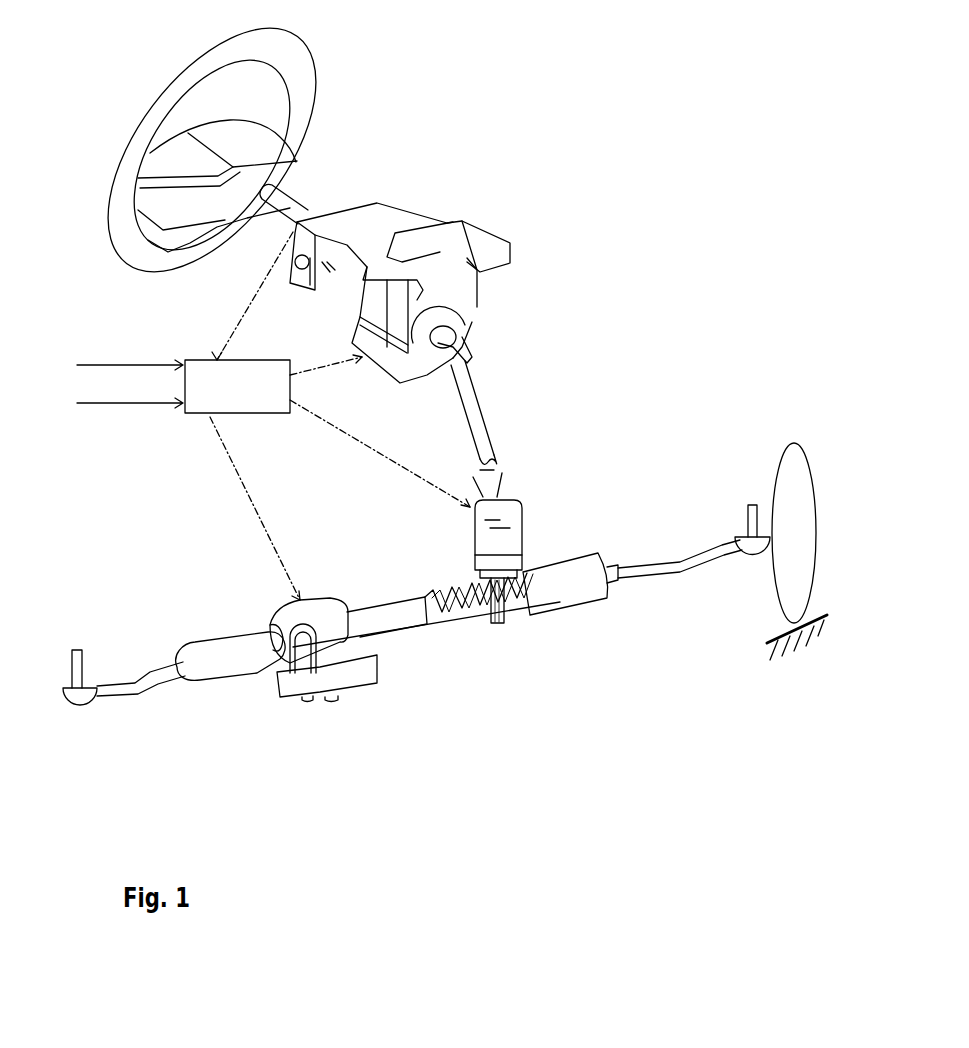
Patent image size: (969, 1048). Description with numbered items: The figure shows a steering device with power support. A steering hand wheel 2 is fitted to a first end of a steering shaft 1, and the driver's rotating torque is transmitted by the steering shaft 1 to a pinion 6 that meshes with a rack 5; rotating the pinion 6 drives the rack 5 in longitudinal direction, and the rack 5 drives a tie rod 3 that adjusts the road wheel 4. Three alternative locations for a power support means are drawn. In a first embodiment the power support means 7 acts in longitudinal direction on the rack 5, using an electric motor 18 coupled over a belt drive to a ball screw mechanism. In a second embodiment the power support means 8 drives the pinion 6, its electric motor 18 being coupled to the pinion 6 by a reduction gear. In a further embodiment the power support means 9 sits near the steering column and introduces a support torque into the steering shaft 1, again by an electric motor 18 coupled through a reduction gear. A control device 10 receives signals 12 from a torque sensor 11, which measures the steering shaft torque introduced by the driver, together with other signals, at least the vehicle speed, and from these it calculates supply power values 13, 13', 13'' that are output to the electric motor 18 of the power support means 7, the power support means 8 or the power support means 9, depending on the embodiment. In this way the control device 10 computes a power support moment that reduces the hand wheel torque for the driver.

The steering shaft 1 is at (293, 210).
The steering hand wheel 2 is at (305, 98).
The tie rod 3 is at (147, 667).
The road wheel 4 is at (790, 490).
The rack 5 is at (473, 623).
The pinion 6 is at (520, 612).
The power support means 7 is at (342, 688).
The power support means 8 is at (510, 540).
The power support means 9 is at (450, 320).
The control device 10 is at (183, 393).
The torque sensor 11 is at (287, 223).
The signals 12 is at (240, 318).
The supply power values 13 is at (232, 508).
The supply power values 13' is at (380, 456).
The supply power values 13'' is at (333, 383).
The electric motor 18 is at (463, 343).